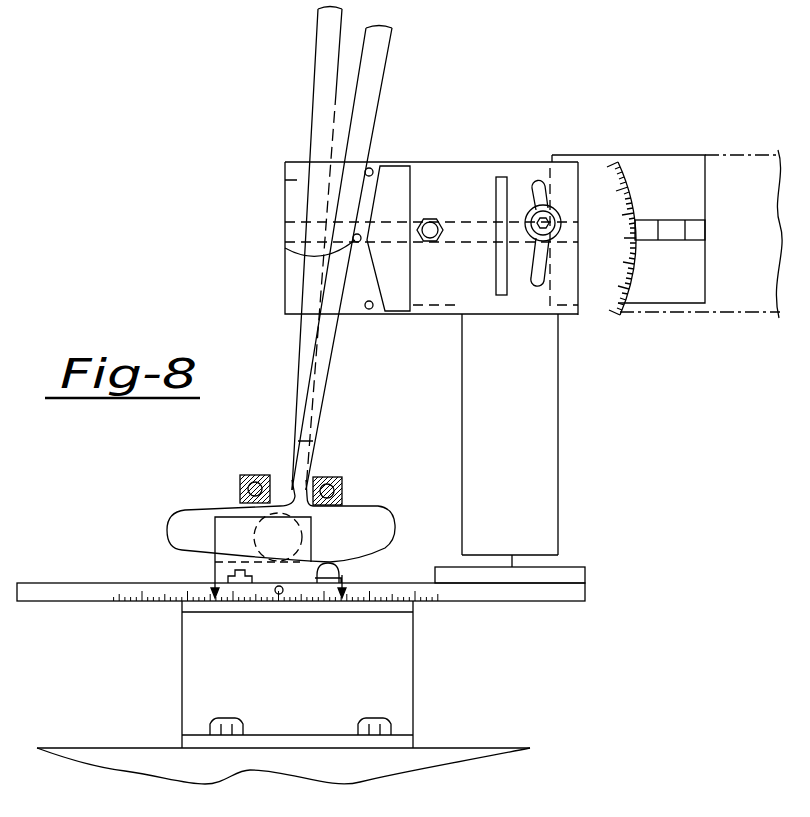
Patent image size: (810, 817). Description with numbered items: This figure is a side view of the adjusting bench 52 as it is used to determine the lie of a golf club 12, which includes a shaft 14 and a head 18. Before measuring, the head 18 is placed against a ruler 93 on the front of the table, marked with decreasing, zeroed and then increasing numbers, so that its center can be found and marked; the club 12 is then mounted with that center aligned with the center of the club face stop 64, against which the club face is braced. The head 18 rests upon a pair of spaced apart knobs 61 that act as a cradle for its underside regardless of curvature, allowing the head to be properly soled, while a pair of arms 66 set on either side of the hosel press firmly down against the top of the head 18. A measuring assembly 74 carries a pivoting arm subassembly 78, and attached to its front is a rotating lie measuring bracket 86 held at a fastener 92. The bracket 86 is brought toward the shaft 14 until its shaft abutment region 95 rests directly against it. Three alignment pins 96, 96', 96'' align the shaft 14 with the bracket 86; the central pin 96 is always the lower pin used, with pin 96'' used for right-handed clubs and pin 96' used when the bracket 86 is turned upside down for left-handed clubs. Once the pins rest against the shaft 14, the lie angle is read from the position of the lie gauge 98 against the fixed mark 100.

The golf club 12 is at (371, 79).
The shaft 14 is at (366, 119).
The head 18 is at (378, 517).
The bench 52 is at (120, 577).
The knobs 61 is at (338, 573).
The club face stop 64 is at (222, 532).
The arms 66 is at (331, 477).
The measuring assembly 74 is at (637, 170).
The pivoting arm subassembly 78 is at (548, 438).
The lie measuring bracket 86 is at (445, 180).
The fastener 92 is at (548, 214).
The ruler 93 is at (455, 595).
The shaft abutment region 95 is at (282, 180).
The central alignment pin 96 is at (292, 245).
The alignment pin 96' is at (394, 333).
The alignment pin 96'' is at (413, 140).
The lie gauge 98 is at (606, 312).
The fixed mark 100 is at (647, 223).